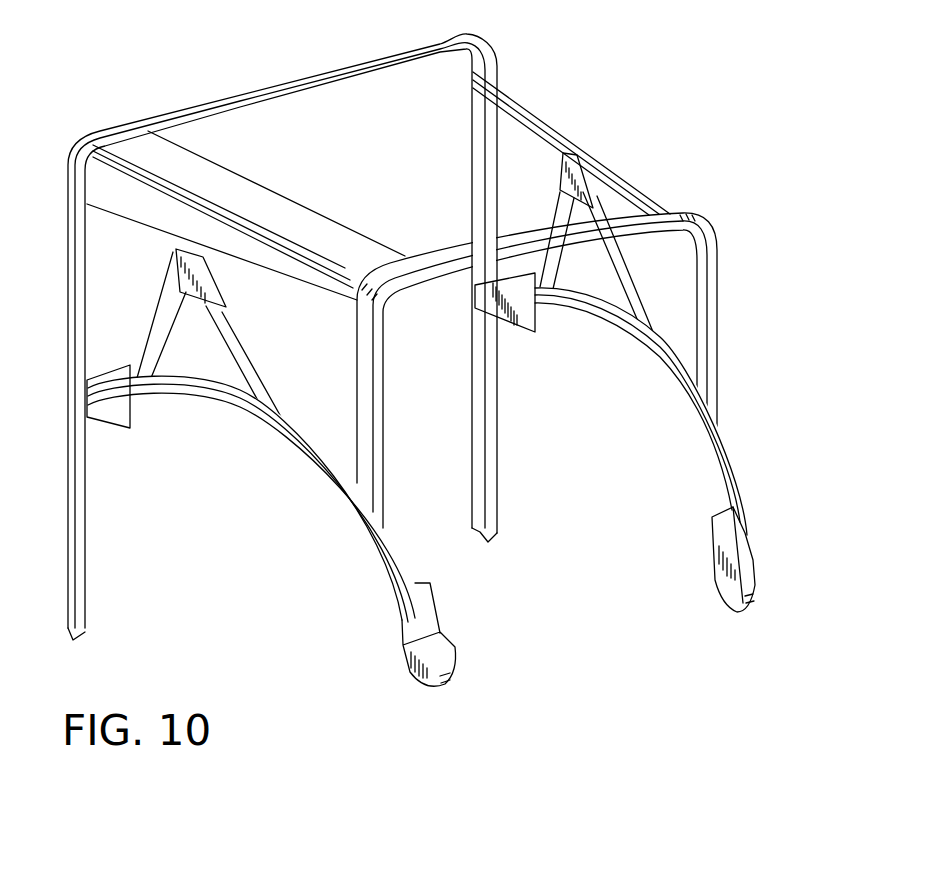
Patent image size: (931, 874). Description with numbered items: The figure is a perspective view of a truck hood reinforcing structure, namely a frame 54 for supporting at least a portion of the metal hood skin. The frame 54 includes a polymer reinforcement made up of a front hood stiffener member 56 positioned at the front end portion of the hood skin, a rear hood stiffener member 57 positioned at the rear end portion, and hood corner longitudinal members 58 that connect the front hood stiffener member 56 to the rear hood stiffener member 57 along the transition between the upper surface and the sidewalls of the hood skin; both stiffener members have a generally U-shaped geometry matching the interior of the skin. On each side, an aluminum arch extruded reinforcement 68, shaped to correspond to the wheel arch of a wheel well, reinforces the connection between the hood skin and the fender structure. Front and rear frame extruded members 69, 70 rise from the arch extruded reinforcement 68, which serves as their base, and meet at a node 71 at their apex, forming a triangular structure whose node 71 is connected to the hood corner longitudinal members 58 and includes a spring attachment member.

The frame 54 is at (440, 360).
The front hood stiffener member 56 is at (713, 350).
The rear hood stiffener member 57 is at (237, 95).
The hood corner longitudinal members 58 is at (247, 187).
The arch extruded reinforcement 68 is at (305, 458).
The front frame extruded member 69 is at (257, 371).
The rear frame extruded member 70 is at (153, 334).
The node 71 is at (178, 272).